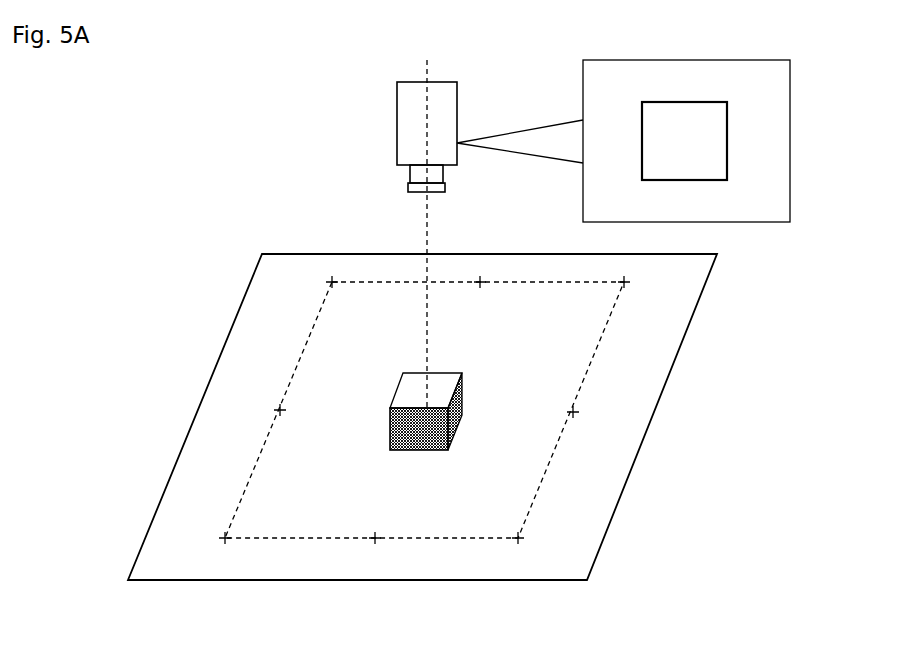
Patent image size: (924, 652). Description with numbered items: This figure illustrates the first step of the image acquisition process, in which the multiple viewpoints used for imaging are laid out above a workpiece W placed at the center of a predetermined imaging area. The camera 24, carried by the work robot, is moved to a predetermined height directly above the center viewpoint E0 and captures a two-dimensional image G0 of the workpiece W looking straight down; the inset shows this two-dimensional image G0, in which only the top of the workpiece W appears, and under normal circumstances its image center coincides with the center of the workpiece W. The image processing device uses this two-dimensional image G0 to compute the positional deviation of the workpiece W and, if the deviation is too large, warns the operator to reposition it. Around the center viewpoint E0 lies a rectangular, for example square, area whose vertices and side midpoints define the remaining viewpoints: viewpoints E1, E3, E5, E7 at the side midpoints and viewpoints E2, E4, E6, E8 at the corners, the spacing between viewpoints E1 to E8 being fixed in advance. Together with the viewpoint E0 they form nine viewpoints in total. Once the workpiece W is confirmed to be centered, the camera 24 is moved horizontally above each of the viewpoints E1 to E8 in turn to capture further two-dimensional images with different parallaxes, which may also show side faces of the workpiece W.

The camera 24 is at (457, 96).
The two-dimensional image G0 is at (686, 141).
The workpiece W is at (440, 380).
The viewpoint E0 is at (455, 420).
The viewpoint E1 is at (575, 414).
The viewpoint E2 is at (520, 536).
The viewpoint E3 is at (377, 536).
The viewpoint E4 is at (227, 536).
The viewpoint E5 is at (282, 412).
The viewpoint E6 is at (334, 284).
The viewpoint E7 is at (482, 284).
The viewpoint E8 is at (626, 284).